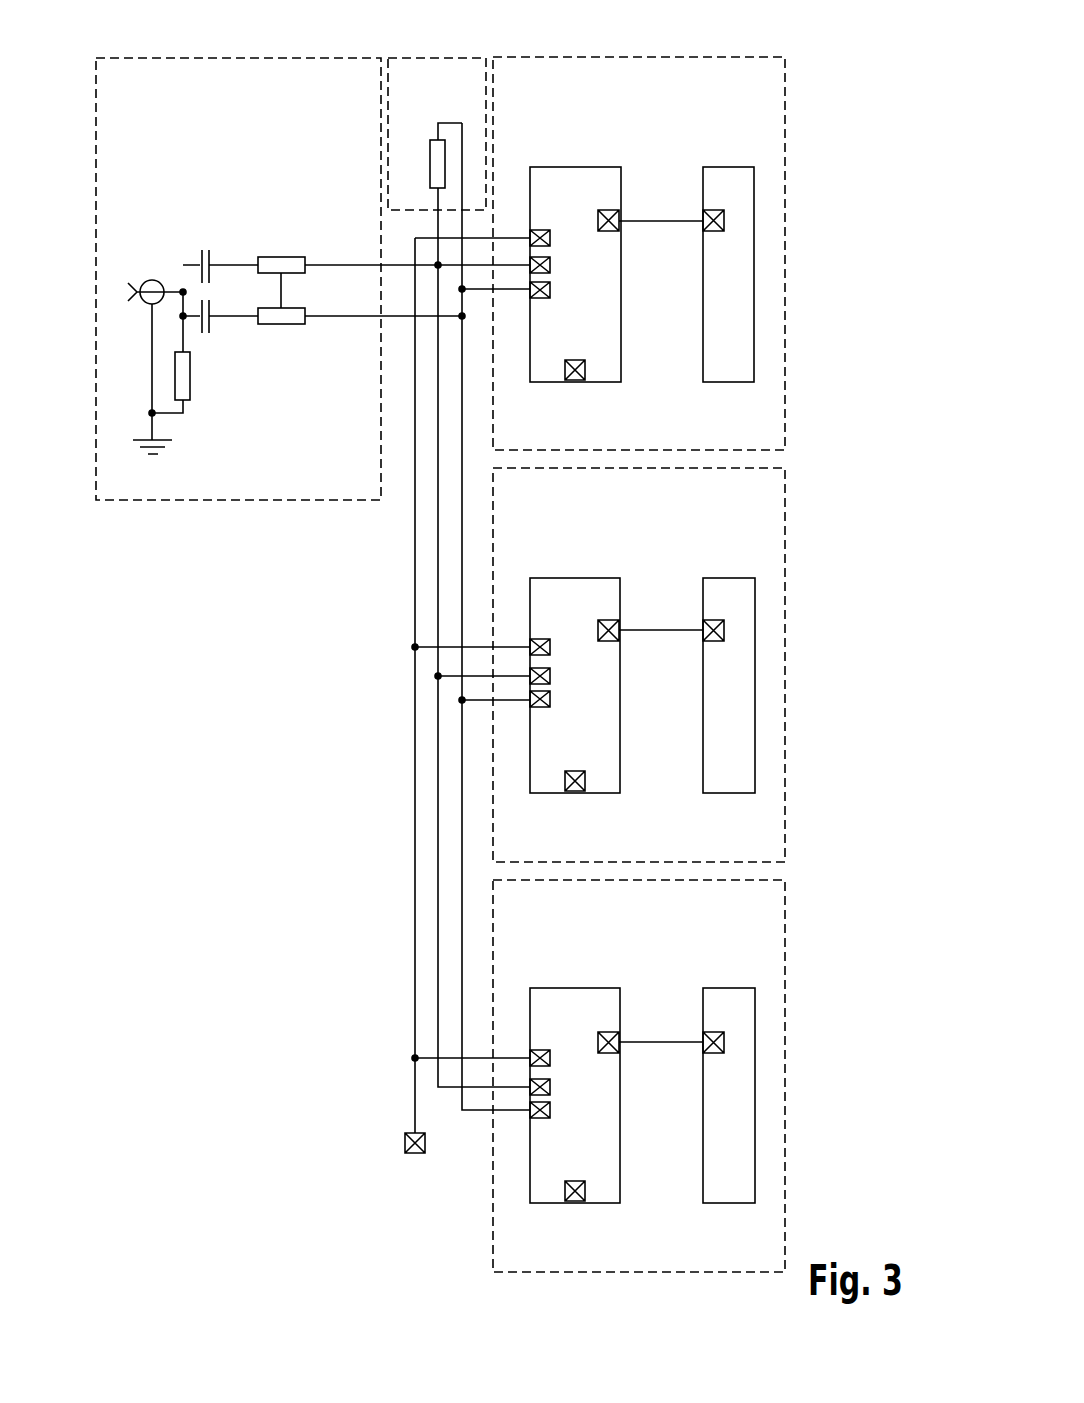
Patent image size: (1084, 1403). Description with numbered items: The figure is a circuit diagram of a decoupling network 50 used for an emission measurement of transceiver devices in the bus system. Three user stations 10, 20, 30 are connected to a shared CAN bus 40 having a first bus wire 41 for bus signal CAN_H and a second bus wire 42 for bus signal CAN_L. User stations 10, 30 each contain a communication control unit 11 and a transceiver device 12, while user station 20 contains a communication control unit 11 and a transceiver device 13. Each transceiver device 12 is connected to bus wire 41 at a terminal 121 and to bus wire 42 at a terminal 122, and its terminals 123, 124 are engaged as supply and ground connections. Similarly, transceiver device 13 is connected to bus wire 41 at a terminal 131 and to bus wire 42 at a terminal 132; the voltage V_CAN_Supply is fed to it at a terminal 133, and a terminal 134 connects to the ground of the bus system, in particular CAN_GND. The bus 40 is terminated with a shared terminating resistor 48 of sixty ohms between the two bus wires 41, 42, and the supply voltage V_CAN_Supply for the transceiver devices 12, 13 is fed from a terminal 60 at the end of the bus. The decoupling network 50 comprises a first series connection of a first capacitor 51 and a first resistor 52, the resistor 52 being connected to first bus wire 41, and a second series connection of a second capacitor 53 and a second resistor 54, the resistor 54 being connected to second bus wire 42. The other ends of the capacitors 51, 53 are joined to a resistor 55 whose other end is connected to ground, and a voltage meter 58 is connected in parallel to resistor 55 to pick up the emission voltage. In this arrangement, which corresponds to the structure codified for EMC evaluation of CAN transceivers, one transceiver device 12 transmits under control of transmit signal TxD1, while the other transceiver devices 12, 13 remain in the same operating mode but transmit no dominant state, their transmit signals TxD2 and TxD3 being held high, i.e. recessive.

The user station 10 is at (786, 78).
The user station 20 is at (786, 490).
The user station 30 is at (786, 900).
The communication control unit 11 is at (729, 167).
The transceiver device 12 is at (574, 167).
The transceiver device 13 is at (574, 578).
The terminal 121 is at (551, 291).
The terminal 122 is at (551, 264).
The terminal 123 is at (544, 230).
The terminal 124 is at (570, 360).
The terminal 131 is at (551, 700).
The terminal 132 is at (551, 676).
The terminal 133 is at (544, 639).
The terminal 134 is at (570, 770).
The bus 40 is at (435, 1218).
The first bus wire 41 is at (483, 1113).
The second bus wire 42 is at (451, 1090).
The terminating resistor 48 is at (435, 57).
The decoupling network 50 is at (229, 57).
The first capacitor 51 is at (218, 329).
The first resistor 52 is at (282, 324).
The second capacitor 53 is at (209, 250).
The second resistor 54 is at (280, 257).
The resistor 55 is at (190, 388).
The voltage meter 58 is at (152, 280).
The terminal 60 is at (414, 1155).